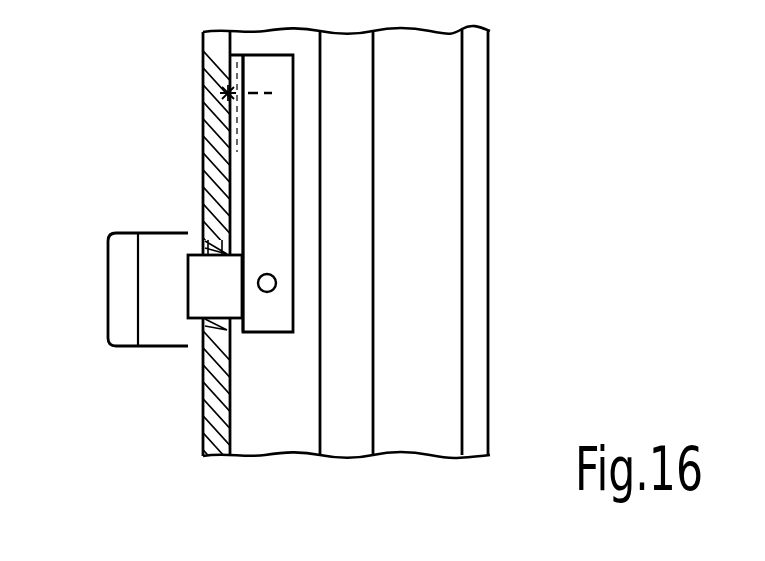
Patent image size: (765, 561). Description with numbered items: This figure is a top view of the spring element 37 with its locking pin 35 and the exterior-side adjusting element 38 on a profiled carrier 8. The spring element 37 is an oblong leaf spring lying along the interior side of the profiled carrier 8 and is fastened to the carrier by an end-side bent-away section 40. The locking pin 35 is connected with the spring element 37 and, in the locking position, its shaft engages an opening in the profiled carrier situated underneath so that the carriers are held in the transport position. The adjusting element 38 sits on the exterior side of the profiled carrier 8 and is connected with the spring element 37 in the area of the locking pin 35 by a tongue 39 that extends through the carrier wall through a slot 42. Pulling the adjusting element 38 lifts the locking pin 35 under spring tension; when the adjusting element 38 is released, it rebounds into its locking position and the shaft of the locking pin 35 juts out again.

The profiled carrier 8 is at (473, 83).
The spring element 37 is at (268, 155).
The end-side bent-away section 40 is at (204, 94).
The exterior adjusting element 38 is at (118, 278).
The tongue 39 is at (208, 277).
The slot 42 is at (203, 347).
The locking pin 35 is at (271, 292).